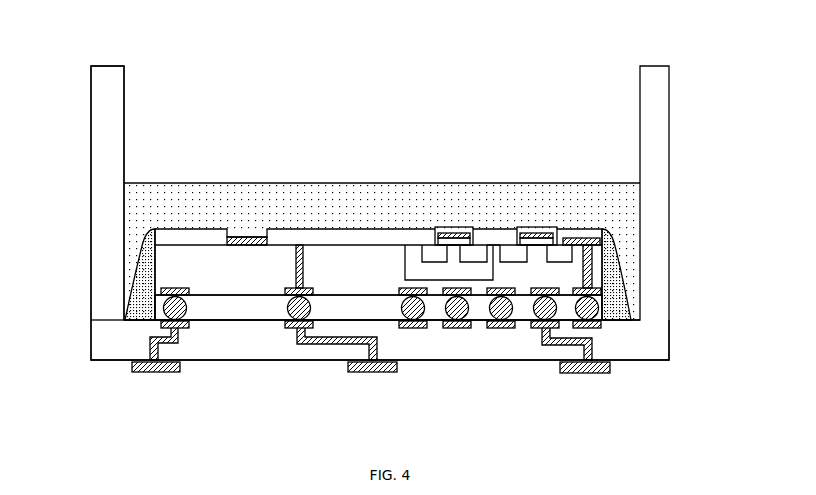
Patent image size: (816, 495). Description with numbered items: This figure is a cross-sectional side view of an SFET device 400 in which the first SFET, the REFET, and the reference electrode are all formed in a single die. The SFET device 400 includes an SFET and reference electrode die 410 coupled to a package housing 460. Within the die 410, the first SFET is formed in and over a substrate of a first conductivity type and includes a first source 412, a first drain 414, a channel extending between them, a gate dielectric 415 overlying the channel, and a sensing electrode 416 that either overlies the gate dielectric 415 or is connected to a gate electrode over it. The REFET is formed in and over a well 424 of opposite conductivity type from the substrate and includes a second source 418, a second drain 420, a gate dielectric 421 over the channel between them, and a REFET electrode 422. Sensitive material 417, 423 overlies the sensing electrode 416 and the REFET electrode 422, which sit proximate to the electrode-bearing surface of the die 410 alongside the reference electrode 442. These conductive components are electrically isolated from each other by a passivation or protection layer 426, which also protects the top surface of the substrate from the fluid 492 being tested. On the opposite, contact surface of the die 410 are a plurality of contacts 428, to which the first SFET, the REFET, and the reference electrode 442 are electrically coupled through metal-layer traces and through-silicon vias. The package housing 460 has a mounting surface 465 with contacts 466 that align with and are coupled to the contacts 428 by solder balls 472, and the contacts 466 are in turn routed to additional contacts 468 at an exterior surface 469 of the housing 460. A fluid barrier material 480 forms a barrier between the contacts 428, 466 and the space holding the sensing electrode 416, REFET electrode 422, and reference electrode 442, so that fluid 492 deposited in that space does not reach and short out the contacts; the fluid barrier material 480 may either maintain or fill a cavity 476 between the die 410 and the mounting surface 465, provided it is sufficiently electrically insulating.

The SFET device 400 is at (91, 51).
The SFET and reference electrode die 410 is at (360, 265).
The first source 412 is at (565, 238).
The first drain 414 is at (513, 250).
The gate dielectric 415 is at (557, 253).
The sensing electrode 416 is at (543, 242).
The sensitive material 417 is at (532, 233).
The second source 418 is at (427, 250).
The second drain 420 is at (480, 248).
The gate dielectric 421 is at (474, 248).
The REFET electrode 422 is at (450, 233).
The sensitive material 423 is at (442, 228).
The well 424 is at (413, 250).
The passivation or protection layer 426 is at (593, 237).
The contacts 428 is at (462, 291).
The reference electrode 442 is at (247, 236).
The package housing 460 is at (124, 92).
The mounting surface 465 is at (125, 318).
The contacts 466 is at (180, 326).
The additional contacts 468 is at (587, 368).
The exterior surface 469 is at (645, 358).
The solder balls 472 is at (453, 313).
The cavity 476 is at (522, 310).
The fluid barrier material 480 is at (142, 285).
The fluid 492 is at (212, 194).